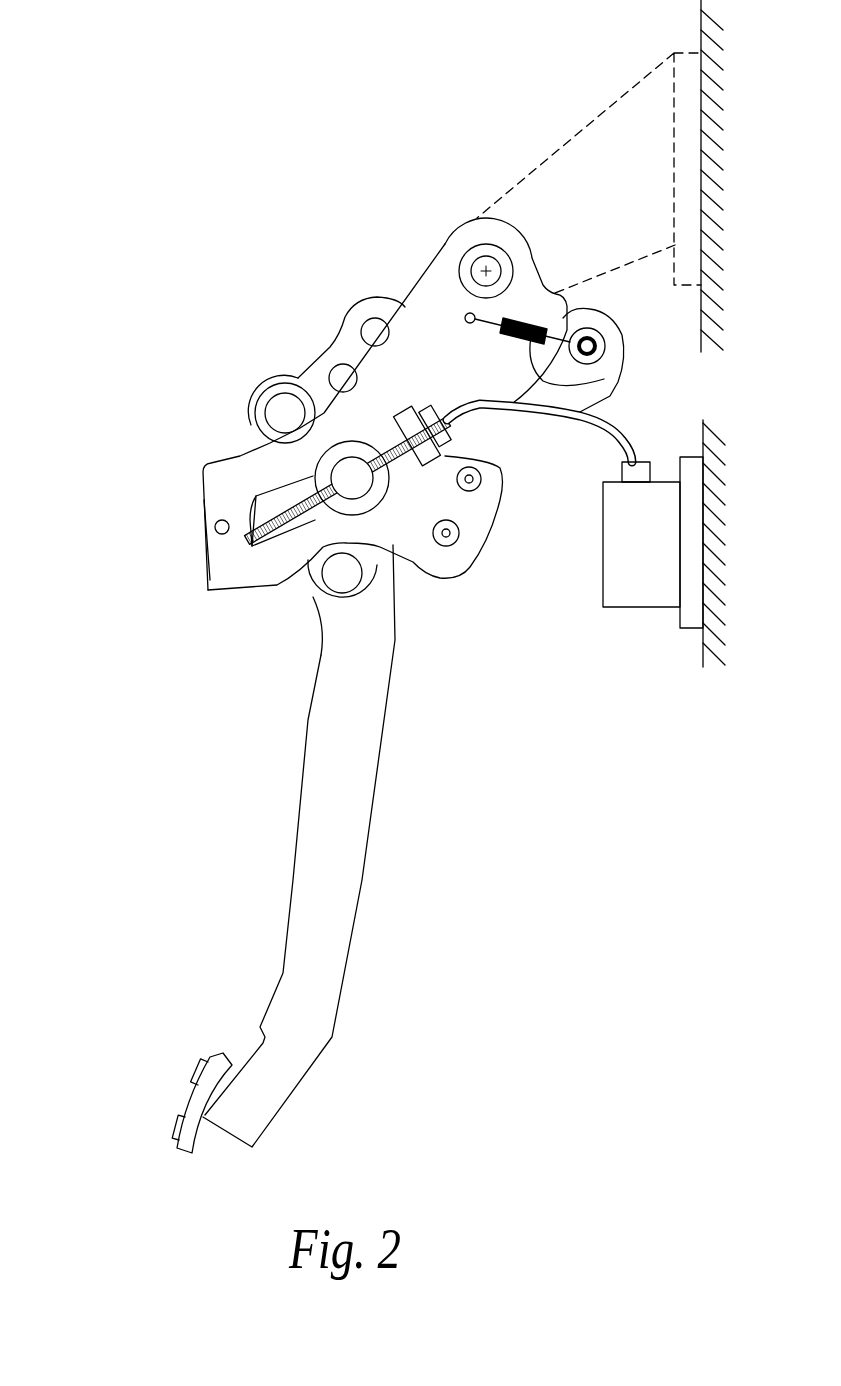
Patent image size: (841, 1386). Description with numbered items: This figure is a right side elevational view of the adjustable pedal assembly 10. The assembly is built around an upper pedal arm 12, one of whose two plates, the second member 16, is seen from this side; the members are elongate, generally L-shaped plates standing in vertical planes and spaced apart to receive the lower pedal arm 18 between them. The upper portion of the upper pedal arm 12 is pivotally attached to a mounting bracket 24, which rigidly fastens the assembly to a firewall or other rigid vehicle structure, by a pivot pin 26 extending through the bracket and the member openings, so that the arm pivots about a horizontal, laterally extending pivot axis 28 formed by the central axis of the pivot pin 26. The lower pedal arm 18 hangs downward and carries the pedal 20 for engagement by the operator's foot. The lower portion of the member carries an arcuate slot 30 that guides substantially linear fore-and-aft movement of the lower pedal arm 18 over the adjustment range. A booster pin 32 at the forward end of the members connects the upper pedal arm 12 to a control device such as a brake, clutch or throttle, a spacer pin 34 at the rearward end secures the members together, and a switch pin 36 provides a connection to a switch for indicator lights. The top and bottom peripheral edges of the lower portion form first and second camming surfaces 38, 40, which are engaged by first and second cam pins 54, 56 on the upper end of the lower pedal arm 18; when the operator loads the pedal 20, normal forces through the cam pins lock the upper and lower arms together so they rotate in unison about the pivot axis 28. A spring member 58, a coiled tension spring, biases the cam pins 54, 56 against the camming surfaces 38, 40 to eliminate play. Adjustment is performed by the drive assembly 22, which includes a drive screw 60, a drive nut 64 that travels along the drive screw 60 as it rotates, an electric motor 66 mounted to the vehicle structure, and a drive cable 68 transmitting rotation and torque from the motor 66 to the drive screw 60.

The adjustable pedal assembly 10 is at (131, 823).
The upper pedal arm 12 is at (200, 504).
The second member 16 is at (207, 572).
The lower pedal arm 18 is at (300, 776).
The pedal 20 is at (186, 1092).
The drive assembly 22 is at (622, 608).
The mounting bracket 24 is at (598, 113).
The pivot pin 26 is at (481, 262).
The pivot axis 28 is at (447, 247).
The slot 30 is at (262, 500).
The booster pin 32 is at (480, 486).
The spacer pin 34 is at (215, 531).
The switch pin 36 is at (449, 546).
The first camming surface 38 is at (254, 496).
The second camming surface 40 is at (308, 582).
The first cam pin 54 is at (285, 393).
The second cam pin 56 is at (335, 594).
The spring member 58 is at (580, 383).
The drive screw 60 is at (247, 542).
The drive nut 64 is at (378, 508).
The electric motor 66 is at (482, 458).
The drive cable 68 is at (636, 440).